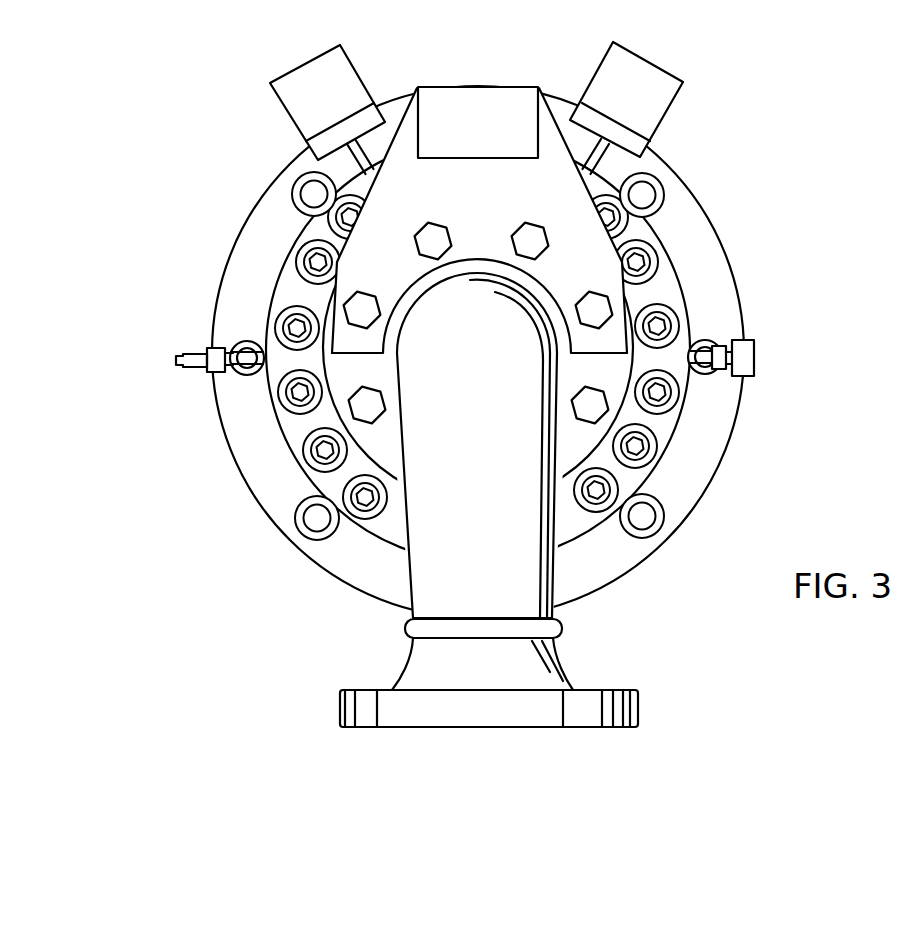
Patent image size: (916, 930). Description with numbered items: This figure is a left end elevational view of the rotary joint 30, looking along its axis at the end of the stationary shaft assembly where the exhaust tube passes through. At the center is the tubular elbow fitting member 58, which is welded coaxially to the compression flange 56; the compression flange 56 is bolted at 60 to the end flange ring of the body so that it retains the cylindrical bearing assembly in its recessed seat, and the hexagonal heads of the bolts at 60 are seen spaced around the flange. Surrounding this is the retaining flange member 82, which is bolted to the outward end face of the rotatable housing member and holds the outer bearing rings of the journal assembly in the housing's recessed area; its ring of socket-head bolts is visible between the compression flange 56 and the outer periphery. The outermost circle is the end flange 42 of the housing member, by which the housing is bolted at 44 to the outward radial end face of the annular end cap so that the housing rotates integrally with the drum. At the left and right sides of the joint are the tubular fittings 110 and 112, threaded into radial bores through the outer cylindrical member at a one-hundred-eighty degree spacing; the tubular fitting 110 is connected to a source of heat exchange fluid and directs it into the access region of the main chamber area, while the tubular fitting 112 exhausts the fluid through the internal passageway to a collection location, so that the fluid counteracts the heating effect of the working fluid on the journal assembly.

The rotary joint 30 is at (260, 538).
The end flange 42 is at (700, 483).
The bolt 44 is at (643, 518).
The compression flange 56 is at (387, 448).
The tubular elbow fitting member 58 is at (481, 540).
The bolt 60 is at (372, 408).
The retaining flange member 82 is at (573, 523).
The tubular fitting 110 is at (194, 350).
The tubular fitting 112 is at (756, 354).